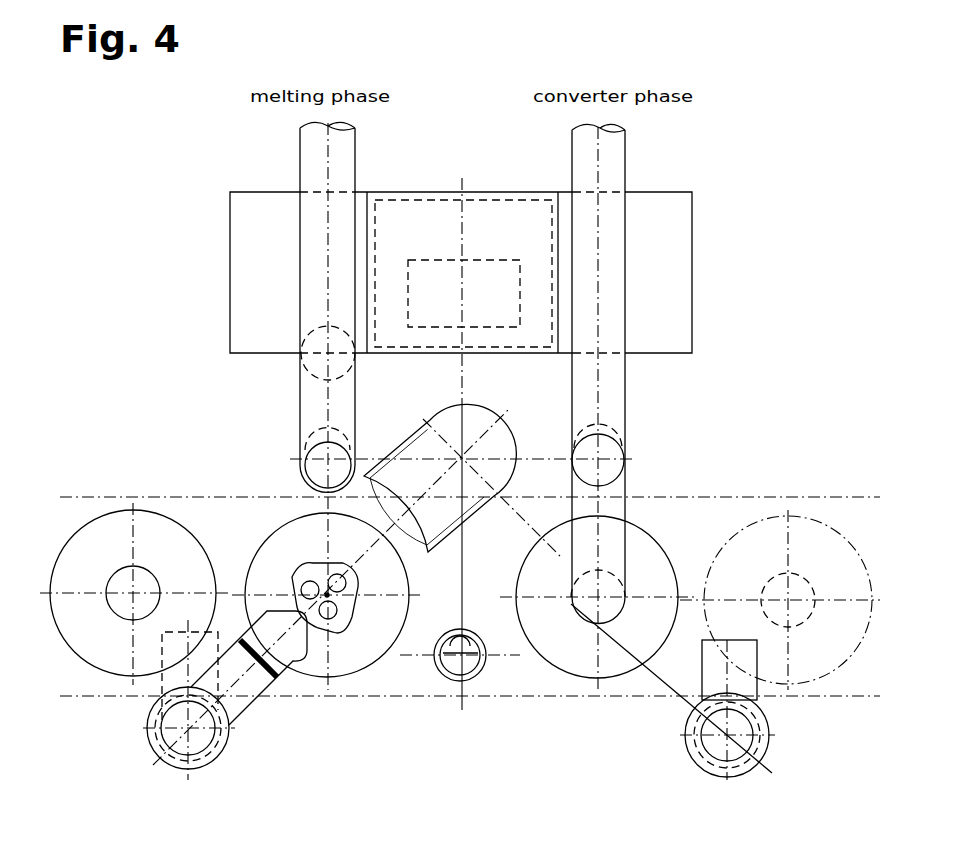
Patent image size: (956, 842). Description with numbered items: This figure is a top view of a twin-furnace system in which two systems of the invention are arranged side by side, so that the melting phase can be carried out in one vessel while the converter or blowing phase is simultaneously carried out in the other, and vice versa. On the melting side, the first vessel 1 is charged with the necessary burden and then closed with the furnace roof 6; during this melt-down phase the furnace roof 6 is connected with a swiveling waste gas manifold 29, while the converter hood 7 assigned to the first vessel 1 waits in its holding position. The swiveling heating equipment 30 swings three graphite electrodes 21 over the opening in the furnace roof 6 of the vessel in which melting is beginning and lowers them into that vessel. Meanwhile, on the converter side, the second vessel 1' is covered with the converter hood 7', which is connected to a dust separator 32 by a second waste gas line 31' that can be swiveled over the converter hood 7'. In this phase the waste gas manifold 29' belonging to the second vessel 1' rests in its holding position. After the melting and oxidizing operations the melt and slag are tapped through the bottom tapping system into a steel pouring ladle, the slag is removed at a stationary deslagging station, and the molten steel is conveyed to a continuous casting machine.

The first vessel 1 is at (404, 723).
The second vessel 1' is at (529, 725).
The furnace roof 6 is at (352, 657).
The converter hood 7 is at (133, 622).
The converter hood 7' is at (613, 596).
The graphite electrodes 21 is at (290, 578).
The swiveling waste gas manifold 29 is at (188, 730).
The waste gas manifold 29' is at (704, 690).
The swiveling heating equipment 30 is at (447, 418).
The second waste gas line 31' is at (629, 373).
The dust separator 32 is at (668, 216).